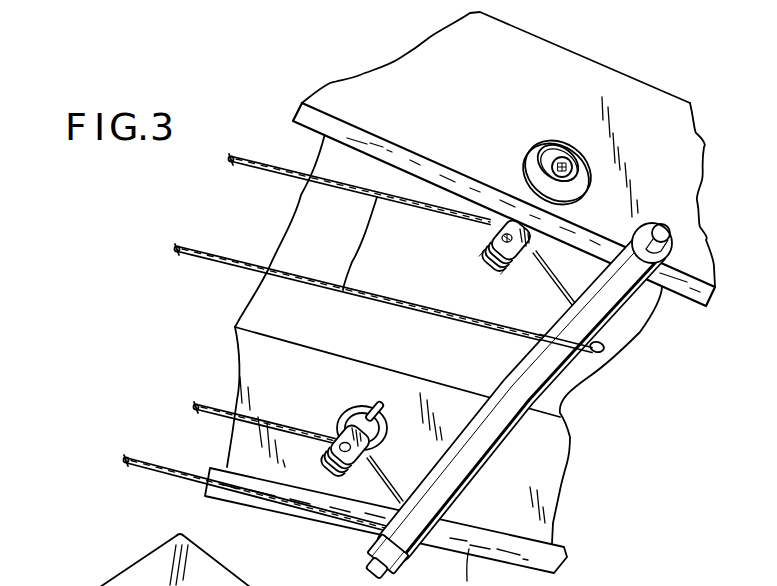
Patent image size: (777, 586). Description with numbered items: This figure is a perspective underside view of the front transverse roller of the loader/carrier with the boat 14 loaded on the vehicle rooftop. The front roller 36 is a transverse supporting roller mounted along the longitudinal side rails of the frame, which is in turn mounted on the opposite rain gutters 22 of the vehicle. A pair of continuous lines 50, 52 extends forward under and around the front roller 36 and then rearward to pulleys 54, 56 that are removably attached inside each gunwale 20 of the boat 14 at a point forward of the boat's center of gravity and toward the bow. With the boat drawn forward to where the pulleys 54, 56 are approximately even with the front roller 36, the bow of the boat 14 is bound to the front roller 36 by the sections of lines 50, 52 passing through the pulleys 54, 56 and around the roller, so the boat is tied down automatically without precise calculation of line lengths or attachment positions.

The boat 14 is at (491, 159).
The gunwales 20 is at (473, 110).
The rain gutters 22 is at (343, 130).
The front roller 36 is at (495, 430).
The continuous line 50 is at (342, 289).
The continuous line 52 is at (181, 469).
The pulley 54 is at (487, 243).
The pulley 56 is at (328, 432).